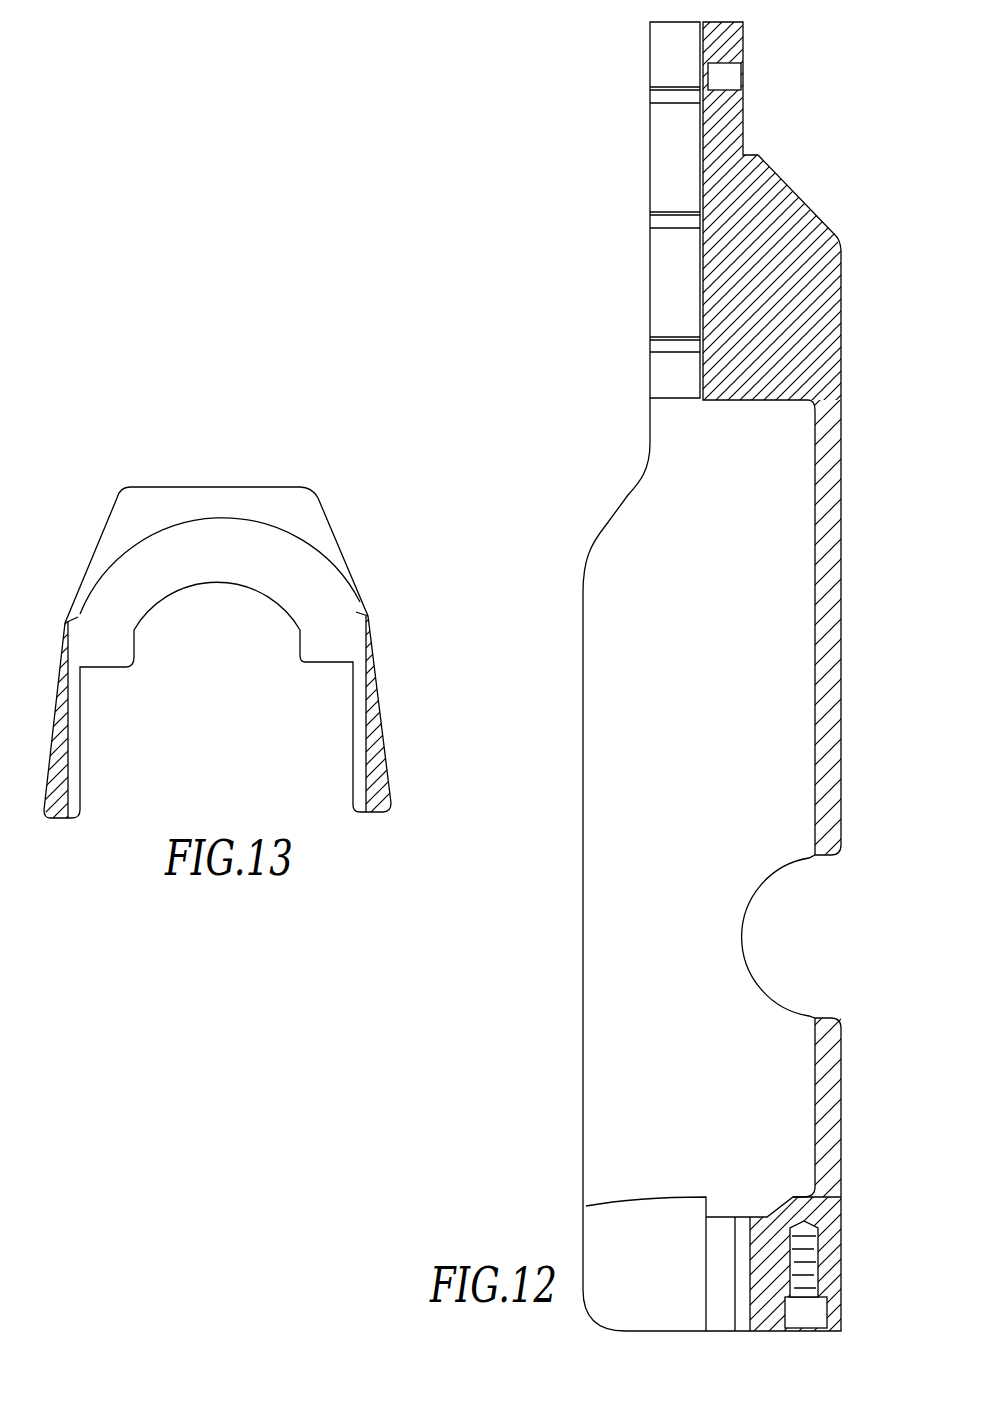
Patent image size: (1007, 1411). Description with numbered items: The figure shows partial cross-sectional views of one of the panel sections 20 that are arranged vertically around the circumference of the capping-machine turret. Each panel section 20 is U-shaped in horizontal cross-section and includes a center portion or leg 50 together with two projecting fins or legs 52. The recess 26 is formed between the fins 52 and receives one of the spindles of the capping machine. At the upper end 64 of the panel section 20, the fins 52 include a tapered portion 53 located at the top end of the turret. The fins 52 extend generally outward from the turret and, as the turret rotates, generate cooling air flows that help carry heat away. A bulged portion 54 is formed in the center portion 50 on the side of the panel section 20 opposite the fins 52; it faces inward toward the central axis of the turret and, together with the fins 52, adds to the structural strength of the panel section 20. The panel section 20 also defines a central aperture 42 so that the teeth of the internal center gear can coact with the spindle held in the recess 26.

In FIG. 12, the panel section 20 is at (626, 123).
In FIG. 13, the panel section 20 is at (304, 459).
In FIG. 13, the recess 26 is at (218, 628).
In FIG. 12, the central aperture 42 is at (770, 976).
In FIG. 13, the center portion 50 is at (213, 537).
In FIG. 12, the fin 52 is at (787, 193).
In FIG. 13, the fin 52 is at (57, 662).
In FIG. 12, the tapered portion 53 is at (818, 206).
In FIG. 12, the bulged portion 54 is at (598, 786).
In FIG. 12, the upper end 64 is at (623, 200).